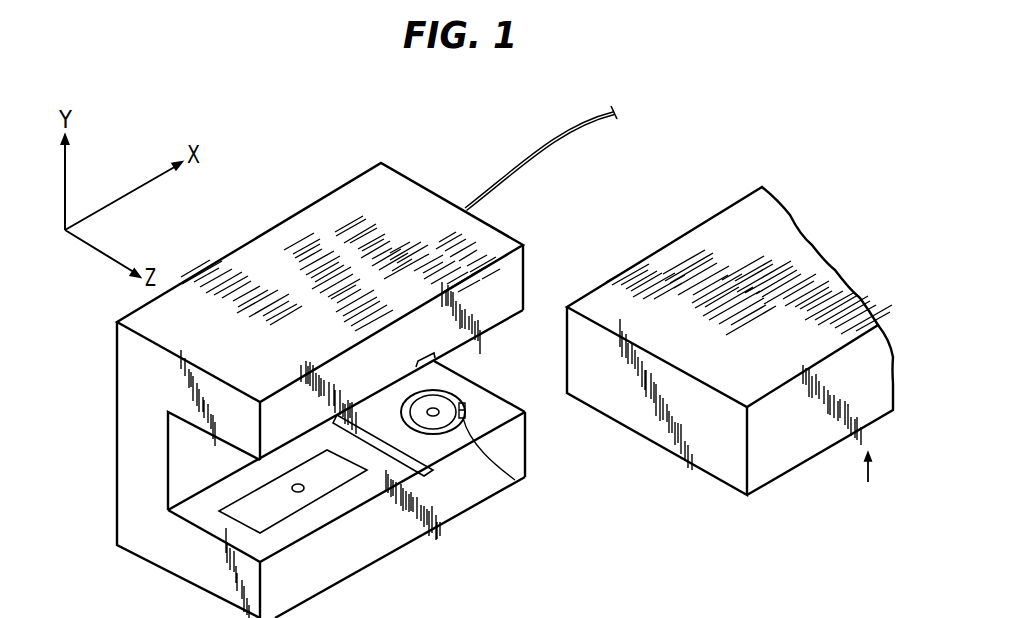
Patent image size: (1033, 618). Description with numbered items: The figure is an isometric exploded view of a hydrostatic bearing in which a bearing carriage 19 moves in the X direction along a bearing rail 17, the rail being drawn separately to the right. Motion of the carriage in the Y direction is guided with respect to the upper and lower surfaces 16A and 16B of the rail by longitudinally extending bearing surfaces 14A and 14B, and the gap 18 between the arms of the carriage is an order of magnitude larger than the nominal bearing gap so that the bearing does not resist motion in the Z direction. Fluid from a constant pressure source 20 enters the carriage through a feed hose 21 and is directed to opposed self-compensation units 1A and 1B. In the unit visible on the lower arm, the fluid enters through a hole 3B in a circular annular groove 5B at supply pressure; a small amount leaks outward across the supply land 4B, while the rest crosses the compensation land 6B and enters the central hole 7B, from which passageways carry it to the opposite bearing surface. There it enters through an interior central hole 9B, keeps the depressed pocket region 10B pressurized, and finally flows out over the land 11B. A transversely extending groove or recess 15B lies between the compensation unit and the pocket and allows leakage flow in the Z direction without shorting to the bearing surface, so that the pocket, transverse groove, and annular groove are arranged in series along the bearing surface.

The self-compensation unit 1A is at (495, 320).
The self-compensation unit 1B is at (460, 449).
The hole 3B is at (526, 478).
The supply land 4B is at (493, 420).
The circular annular groove 5B is at (465, 405).
The compensation land 6B is at (446, 410).
The central hole 7B is at (436, 405).
The central hole 9B is at (303, 493).
The depressed pocket region 10B is at (198, 527).
The land 11B is at (248, 506).
The bearing surface 14A is at (311, 437).
The bearing surface 14B is at (250, 534).
The transverse groove 15B is at (433, 474).
The upper surface of bearing rail 16A is at (707, 245).
The lower surface of bearing rail 16B is at (798, 463).
The bearing rail 17 is at (867, 485).
The gap 18 is at (177, 450).
The bearing carriage 19 is at (340, 217).
The constant pressure source 20 is at (640, 99).
The feed hose 21 is at (557, 146).